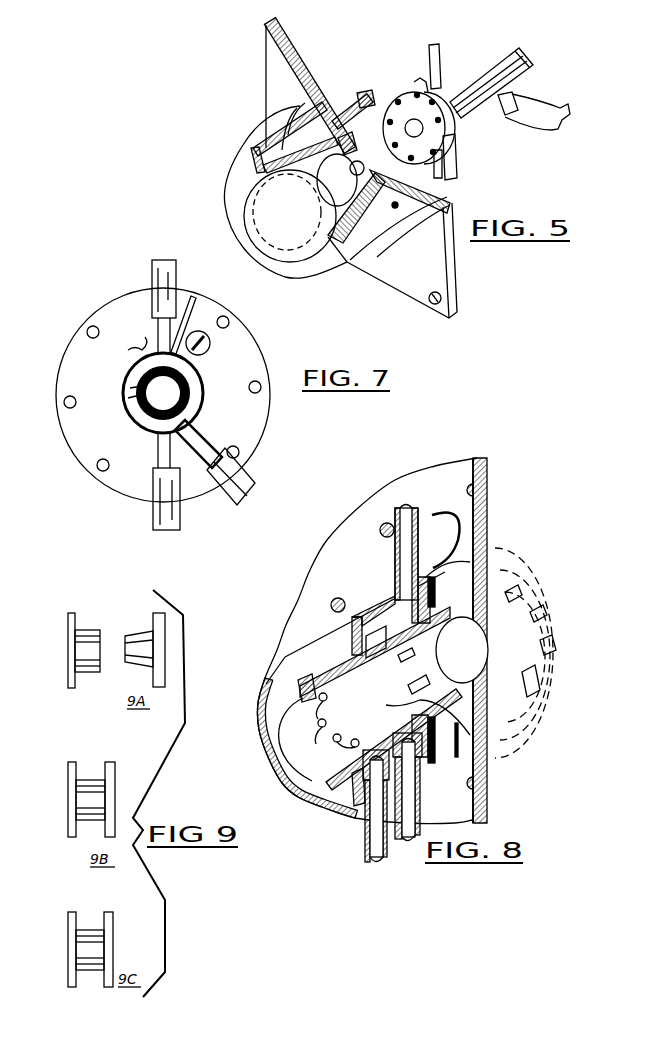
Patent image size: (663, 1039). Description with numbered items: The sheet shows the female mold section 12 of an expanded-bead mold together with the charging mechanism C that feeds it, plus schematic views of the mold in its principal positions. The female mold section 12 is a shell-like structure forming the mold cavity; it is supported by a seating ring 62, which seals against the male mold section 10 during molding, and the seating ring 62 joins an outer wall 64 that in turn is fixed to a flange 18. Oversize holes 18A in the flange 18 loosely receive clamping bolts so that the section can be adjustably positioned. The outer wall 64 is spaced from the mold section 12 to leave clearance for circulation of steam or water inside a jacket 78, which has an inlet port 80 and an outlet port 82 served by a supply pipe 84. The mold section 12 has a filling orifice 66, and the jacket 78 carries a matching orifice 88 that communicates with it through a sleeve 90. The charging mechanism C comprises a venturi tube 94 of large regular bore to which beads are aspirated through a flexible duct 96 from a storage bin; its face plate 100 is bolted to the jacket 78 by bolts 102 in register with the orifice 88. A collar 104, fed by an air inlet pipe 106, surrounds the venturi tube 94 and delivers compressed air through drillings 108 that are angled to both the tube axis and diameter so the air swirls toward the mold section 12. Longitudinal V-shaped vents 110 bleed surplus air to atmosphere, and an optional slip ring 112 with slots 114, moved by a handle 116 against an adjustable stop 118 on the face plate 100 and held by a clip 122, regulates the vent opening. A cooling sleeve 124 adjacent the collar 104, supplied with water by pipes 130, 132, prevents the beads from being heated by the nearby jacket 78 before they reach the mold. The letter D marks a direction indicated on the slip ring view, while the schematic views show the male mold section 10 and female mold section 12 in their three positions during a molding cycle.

In FIG. 9, the mold section 10 is at (128, 636).
In FIG. 5, the female mold section 12 is at (230, 222).
In FIG. 9, the female mold section 12 is at (98, 630).
In FIG. 5, the flange 18 is at (272, 57).
In FIG. 5, the oversize holes 18A is at (437, 305).
In FIG. 5, the seating ring 62 is at (229, 178).
In FIG. 5, the outer wall 64 is at (262, 139).
In FIG. 5, the filling orifice 66 is at (341, 182).
In FIG. 5, the jacket 78 is at (290, 52).
In FIG. 5, the inlet port 80 is at (330, 135).
In FIG. 5, the outlet port 82 is at (391, 208).
In FIG. 5, the supply pipe 84 is at (362, 96).
In FIG. 5, the orifice 88 is at (368, 166).
In FIG. 5, the sleeve 90 is at (356, 150).
In FIG. 7, the venturi tube 94 is at (200, 401).
In FIG. 8, the venturi tube 94 is at (346, 808).
In FIG. 5, the flexible duct 96 is at (538, 108).
In FIG. 5, the face plate 100 is at (395, 106).
In FIG. 7, the face plate 100 is at (109, 312).
In FIG. 8, the face plate 100 is at (339, 541).
In FIG. 5, the bolts 102 is at (418, 79).
In FIG. 7, the collar 104 is at (205, 386).
In FIG. 8, the collar 104 is at (286, 660).
In FIG. 5, the air inlet pipe 106 is at (457, 172).
In FIG. 7, the air inlet pipe 106 is at (256, 488).
In FIG. 8, the air inlet pipe 106 is at (364, 838).
In FIG. 7, the drillings 108 is at (132, 386).
In FIG. 8, the drillings 108 is at (337, 743).
In FIG. 8, the longitudinal vents 110 is at (417, 691).
In FIG. 8, the slip ring 112 is at (489, 525).
In FIG. 5, the slots 114 is at (414, 128).
In FIG. 8, the slots 114 is at (560, 625).
In FIG. 7, the handle 116 is at (197, 300).
In FIG. 7, the adjustable stop 118 is at (213, 346).
In FIG. 7, the clip 122 is at (128, 355).
In FIG. 8, the clip 122 is at (467, 508).
In FIG. 8, the cooling sleeve 124 is at (389, 598).
In FIG. 5, the pipe 130 is at (430, 50).
In FIG. 7, the pipe 130 is at (178, 276).
In FIG. 8, the pipe 130 is at (417, 500).
In FIG. 5, the pipe 132 is at (435, 172).
In FIG. 7, the pipe 132 is at (153, 523).
In FIG. 8, the pipe 132 is at (416, 848).
In FIG. 5, the charging mechanism C is at (494, 58).
In FIG. 8, the drum D is at (524, 639).